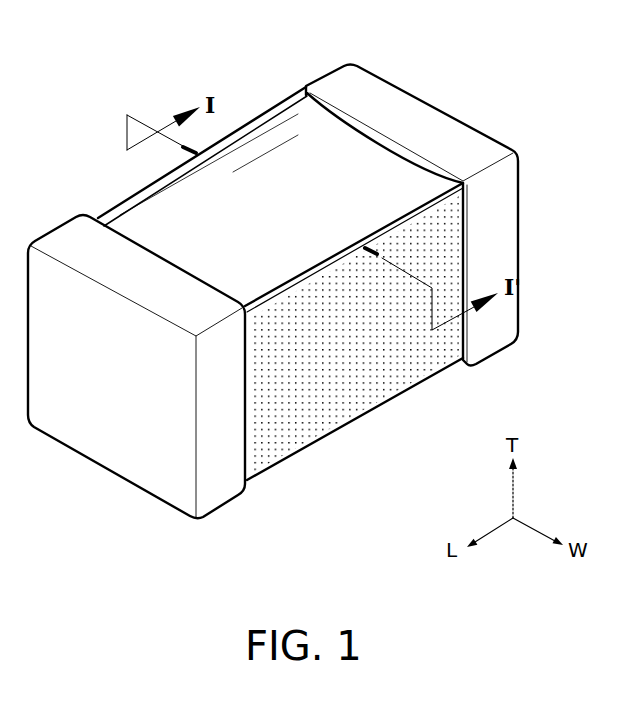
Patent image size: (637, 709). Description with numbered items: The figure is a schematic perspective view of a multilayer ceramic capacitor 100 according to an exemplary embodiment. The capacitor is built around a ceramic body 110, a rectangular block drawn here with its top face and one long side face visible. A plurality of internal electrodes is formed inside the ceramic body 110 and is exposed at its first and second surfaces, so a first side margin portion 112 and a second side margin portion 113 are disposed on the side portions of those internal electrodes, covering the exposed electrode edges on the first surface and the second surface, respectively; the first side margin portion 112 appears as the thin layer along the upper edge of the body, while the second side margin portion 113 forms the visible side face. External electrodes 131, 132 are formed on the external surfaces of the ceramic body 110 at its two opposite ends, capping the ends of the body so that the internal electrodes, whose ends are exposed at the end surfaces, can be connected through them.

The multilayer ceramic capacitor 100 is at (92, 47).
The ceramic body 110 is at (285, 182).
The first side margin portion 112 is at (121, 202).
The second side margin portion 113 is at (340, 392).
The external electrode 131 is at (68, 229).
The external electrode 132 is at (330, 80).